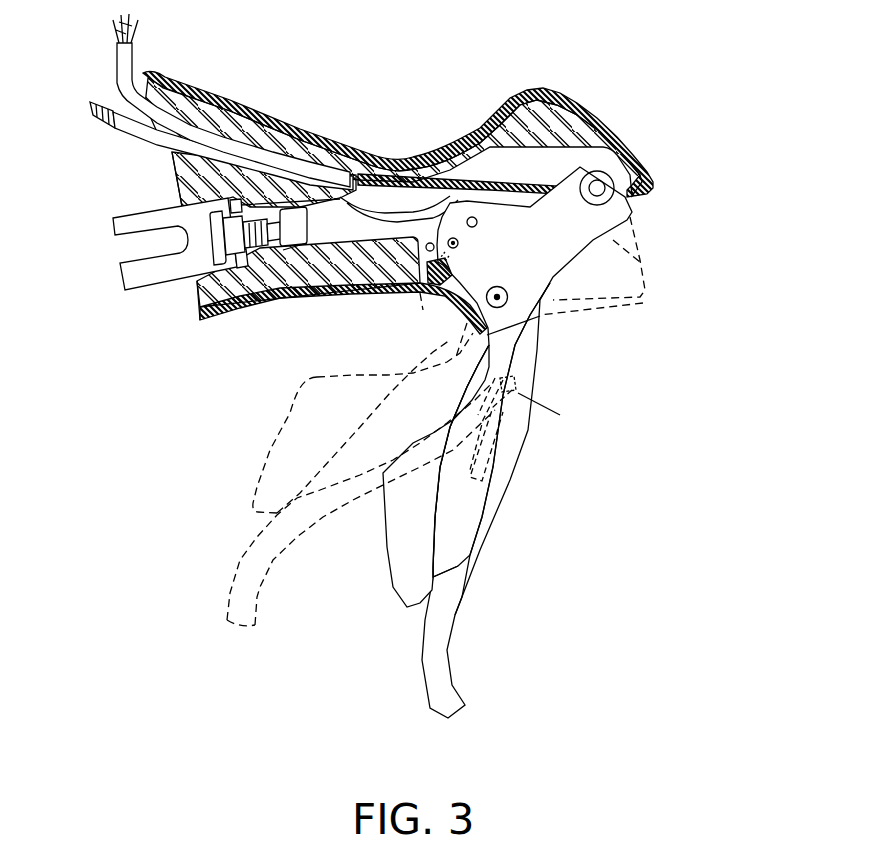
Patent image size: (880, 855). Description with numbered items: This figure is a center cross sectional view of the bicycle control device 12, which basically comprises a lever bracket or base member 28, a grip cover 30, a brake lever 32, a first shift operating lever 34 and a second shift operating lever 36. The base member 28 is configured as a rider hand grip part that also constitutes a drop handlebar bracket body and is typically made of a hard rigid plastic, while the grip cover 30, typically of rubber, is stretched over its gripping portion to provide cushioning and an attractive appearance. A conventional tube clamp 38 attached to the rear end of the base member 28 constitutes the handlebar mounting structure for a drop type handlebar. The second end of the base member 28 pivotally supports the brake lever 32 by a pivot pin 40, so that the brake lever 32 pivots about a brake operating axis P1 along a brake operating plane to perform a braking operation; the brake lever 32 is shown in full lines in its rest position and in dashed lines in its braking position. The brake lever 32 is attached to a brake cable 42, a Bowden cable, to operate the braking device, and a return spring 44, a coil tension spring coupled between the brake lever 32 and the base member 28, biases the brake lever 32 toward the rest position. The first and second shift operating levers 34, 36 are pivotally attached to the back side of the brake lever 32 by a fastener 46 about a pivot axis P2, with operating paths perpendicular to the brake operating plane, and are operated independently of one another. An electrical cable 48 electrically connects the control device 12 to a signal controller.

The bicycle control device 12 is at (662, 127).
The base member 28 is at (228, 122).
The grip cover 30 is at (294, 122).
The brake lever 32 is at (522, 448).
The first shift operating lever 34 is at (401, 547).
The second shift operating lever 36 is at (453, 512).
The tube clamp 38 is at (112, 237).
The pivot pin 40 is at (496, 287).
The brake cable 42 is at (138, 142).
The return spring 44 is at (421, 298).
The fastener 46 is at (514, 378).
The electrical cable 48 is at (114, 63).
The brake operating axis P1 is at (502, 308).
The pivot axis P2 is at (546, 410).